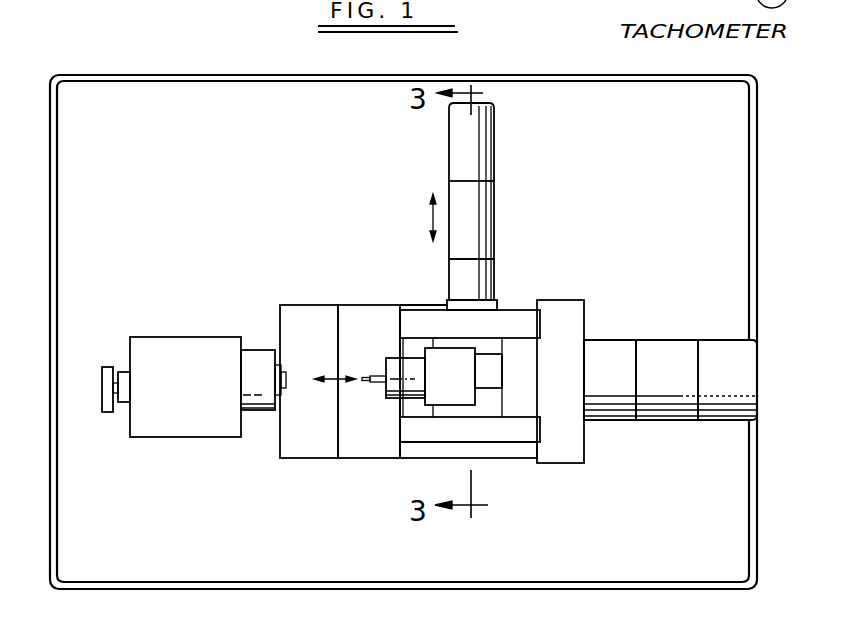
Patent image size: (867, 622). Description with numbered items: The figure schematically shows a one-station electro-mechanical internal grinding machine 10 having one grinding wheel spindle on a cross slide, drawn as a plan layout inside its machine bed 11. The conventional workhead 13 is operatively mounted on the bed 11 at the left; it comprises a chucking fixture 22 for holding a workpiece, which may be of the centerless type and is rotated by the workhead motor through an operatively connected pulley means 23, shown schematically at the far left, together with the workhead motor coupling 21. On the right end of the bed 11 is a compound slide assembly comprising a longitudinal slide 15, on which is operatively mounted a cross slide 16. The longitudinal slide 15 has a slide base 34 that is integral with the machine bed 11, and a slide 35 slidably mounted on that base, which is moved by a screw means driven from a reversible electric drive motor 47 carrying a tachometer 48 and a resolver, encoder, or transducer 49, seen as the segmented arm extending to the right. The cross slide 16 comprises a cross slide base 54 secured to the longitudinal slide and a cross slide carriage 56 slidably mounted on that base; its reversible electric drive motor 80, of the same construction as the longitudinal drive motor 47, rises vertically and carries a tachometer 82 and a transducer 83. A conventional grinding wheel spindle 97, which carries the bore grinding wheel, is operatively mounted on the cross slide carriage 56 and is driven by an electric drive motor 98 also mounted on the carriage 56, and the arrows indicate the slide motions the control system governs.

The internal grinding machine 10 is at (108, 74).
The machine bed 11 is at (730, 543).
The workhead 13 is at (175, 440).
The longitudinal slide 15 is at (349, 461).
The cross slide 16 is at (475, 446).
The motor coupling 21 is at (138, 421).
The chucking fixture 22 is at (255, 362).
The pulley means 23 is at (110, 368).
The slide base 34 is at (298, 450).
The slide 35 is at (368, 450).
The drive motor 47 is at (612, 352).
The tachometer 48 is at (660, 352).
The transducer 49 is at (715, 352).
The cross slide base 54 is at (517, 322).
The cross slide carriage 56 is at (524, 397).
The drive motor 80 is at (473, 280).
The tachometer 82 is at (482, 220).
The transducer 83 is at (483, 150).
The grinding wheel spindle 97 is at (395, 370).
The electric drive motor 98 is at (453, 395).